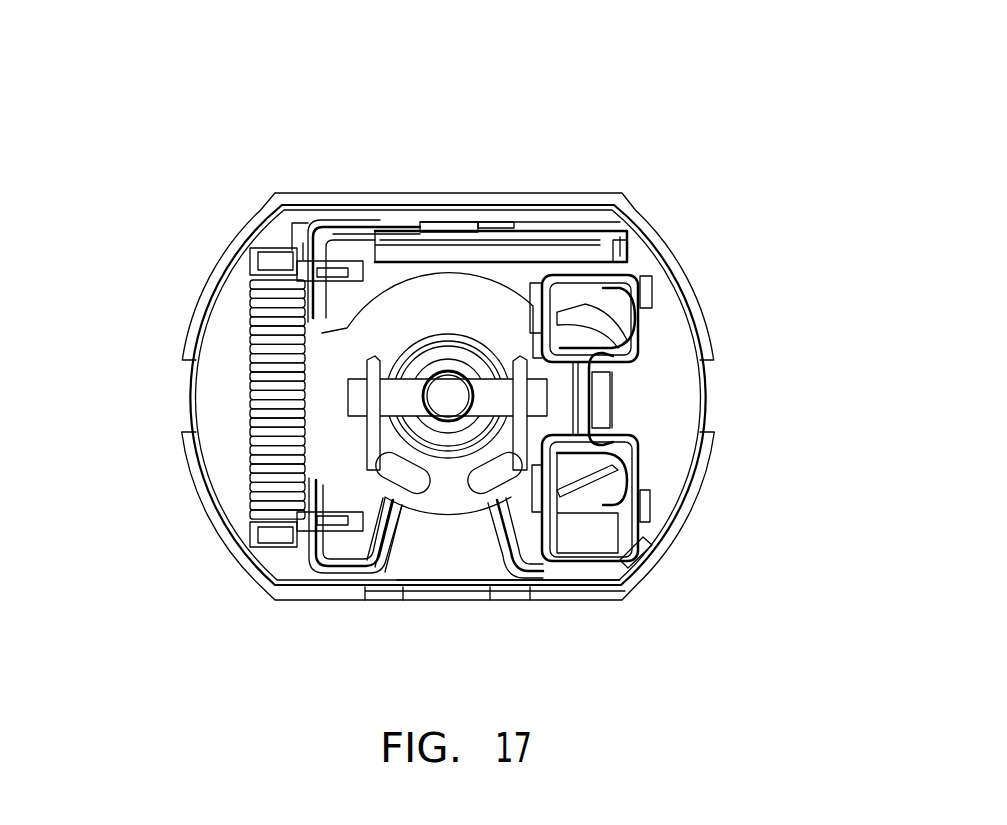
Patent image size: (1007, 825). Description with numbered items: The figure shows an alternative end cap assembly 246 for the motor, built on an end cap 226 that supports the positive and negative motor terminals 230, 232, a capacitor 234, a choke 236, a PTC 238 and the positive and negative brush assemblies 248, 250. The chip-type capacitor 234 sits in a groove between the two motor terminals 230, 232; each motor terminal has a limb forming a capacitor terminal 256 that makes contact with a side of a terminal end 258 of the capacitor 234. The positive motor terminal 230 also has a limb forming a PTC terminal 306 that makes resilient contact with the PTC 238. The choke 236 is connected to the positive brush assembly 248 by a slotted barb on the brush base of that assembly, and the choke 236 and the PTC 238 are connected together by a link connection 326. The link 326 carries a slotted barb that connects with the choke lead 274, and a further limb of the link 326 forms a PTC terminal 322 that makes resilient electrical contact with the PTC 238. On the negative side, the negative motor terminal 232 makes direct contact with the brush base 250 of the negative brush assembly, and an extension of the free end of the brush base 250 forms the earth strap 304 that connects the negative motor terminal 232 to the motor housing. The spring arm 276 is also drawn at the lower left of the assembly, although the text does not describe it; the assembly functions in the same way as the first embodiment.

The end cap 226 is at (292, 192).
The positive motor terminal 230 is at (637, 315).
The negative motor terminal 232 is at (632, 483).
The capacitor 234 is at (600, 400).
The choke 236 is at (272, 363).
The PTC 238 is at (570, 236).
The end cap assembly 246 is at (623, 97).
The positive brush assembly 248 is at (400, 560).
The negative brush assembly brush base 250 is at (507, 540).
The capacitor terminal 256 is at (600, 378).
The terminal end 258 is at (598, 362).
The choke lead 274 is at (338, 270).
The lower spring arm 276 is at (332, 523).
The earth strap 304 is at (632, 565).
The PTC terminal 306 is at (598, 262).
The PTC terminal 322 is at (450, 228).
The link connection 326 is at (393, 225).